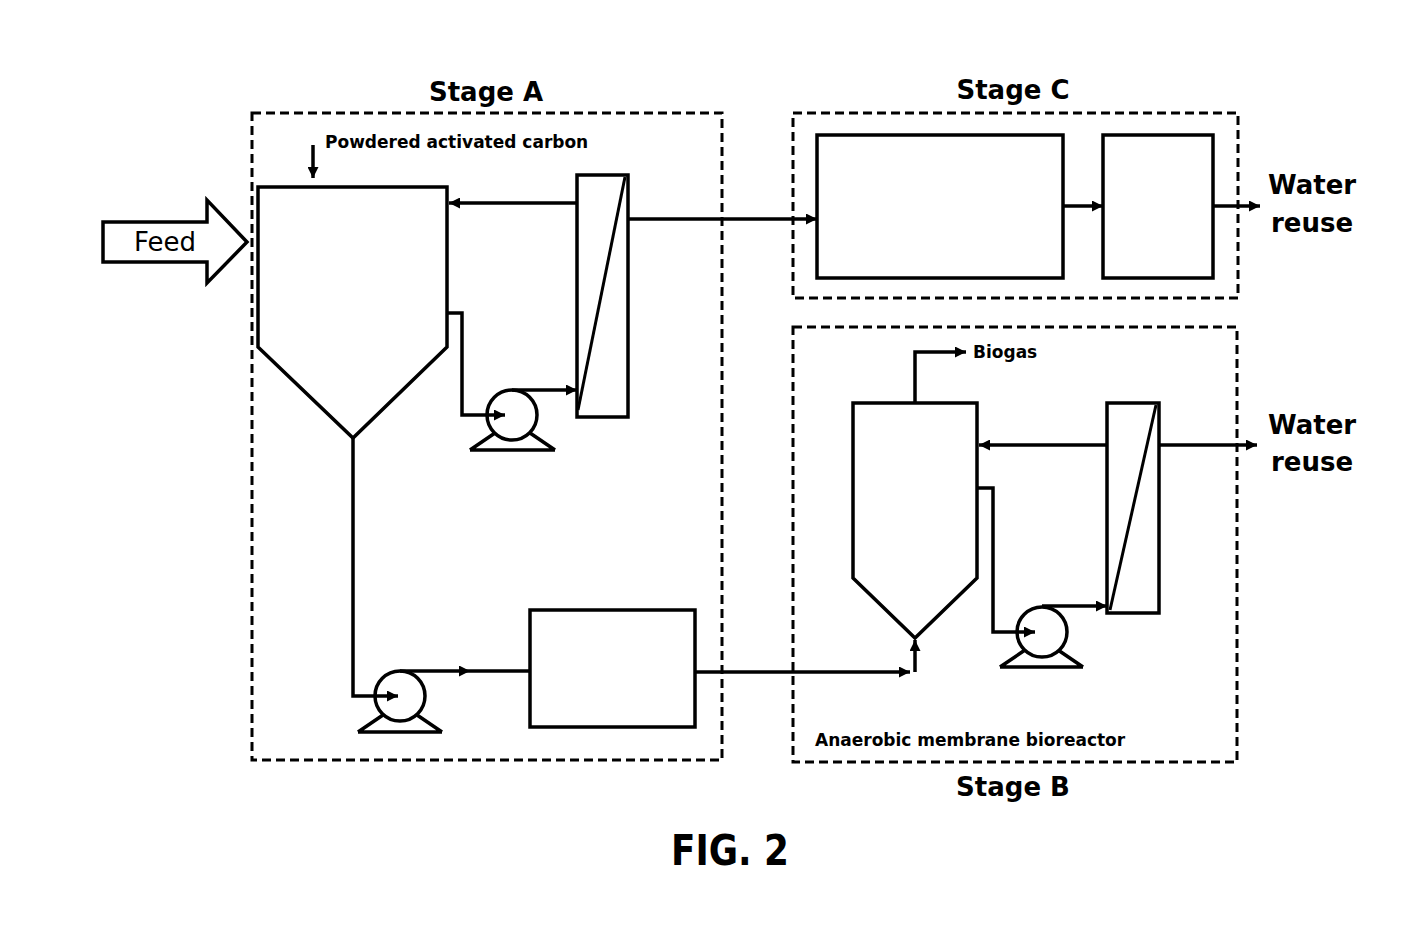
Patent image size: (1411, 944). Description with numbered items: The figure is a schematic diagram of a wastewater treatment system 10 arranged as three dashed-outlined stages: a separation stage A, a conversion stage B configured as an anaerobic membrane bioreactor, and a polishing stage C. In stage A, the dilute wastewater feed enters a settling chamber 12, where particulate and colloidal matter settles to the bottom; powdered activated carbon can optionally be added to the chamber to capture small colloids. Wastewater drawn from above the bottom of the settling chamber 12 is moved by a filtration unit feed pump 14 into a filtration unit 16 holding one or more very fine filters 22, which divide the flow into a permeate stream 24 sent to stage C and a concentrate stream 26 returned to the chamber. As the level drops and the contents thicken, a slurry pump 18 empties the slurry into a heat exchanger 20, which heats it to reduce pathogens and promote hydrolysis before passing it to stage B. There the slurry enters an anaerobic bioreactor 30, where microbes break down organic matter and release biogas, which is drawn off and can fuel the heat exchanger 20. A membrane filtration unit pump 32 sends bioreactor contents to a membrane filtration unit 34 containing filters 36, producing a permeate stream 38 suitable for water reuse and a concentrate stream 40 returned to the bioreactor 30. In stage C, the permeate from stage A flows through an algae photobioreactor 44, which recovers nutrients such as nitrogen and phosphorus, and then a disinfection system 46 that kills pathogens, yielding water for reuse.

The wastewater treatment system 10 is at (1288, 101).
The settling chamber 12 is at (340, 299).
The filtration unit feed pump 14 is at (573, 447).
The filtration unit 16 is at (615, 313).
The slurry pump 18 is at (414, 651).
The heat exchanger 20 is at (598, 678).
The filters 22 is at (597, 284).
The permeate stream 24 is at (676, 223).
The concentrate stream 26 is at (500, 207).
The anaerobic bioreactor 30 is at (900, 513).
The membrane filtration unit pump 32 is at (1094, 657).
The membrane filtration unit 34 is at (1140, 531).
The filters 36 is at (1125, 500).
The permeate stream 38 is at (1196, 442).
The concentrate stream 40 is at (1044, 443).
The algae photobioreactor 44 is at (926, 216).
The disinfection system 46 is at (1143, 216).